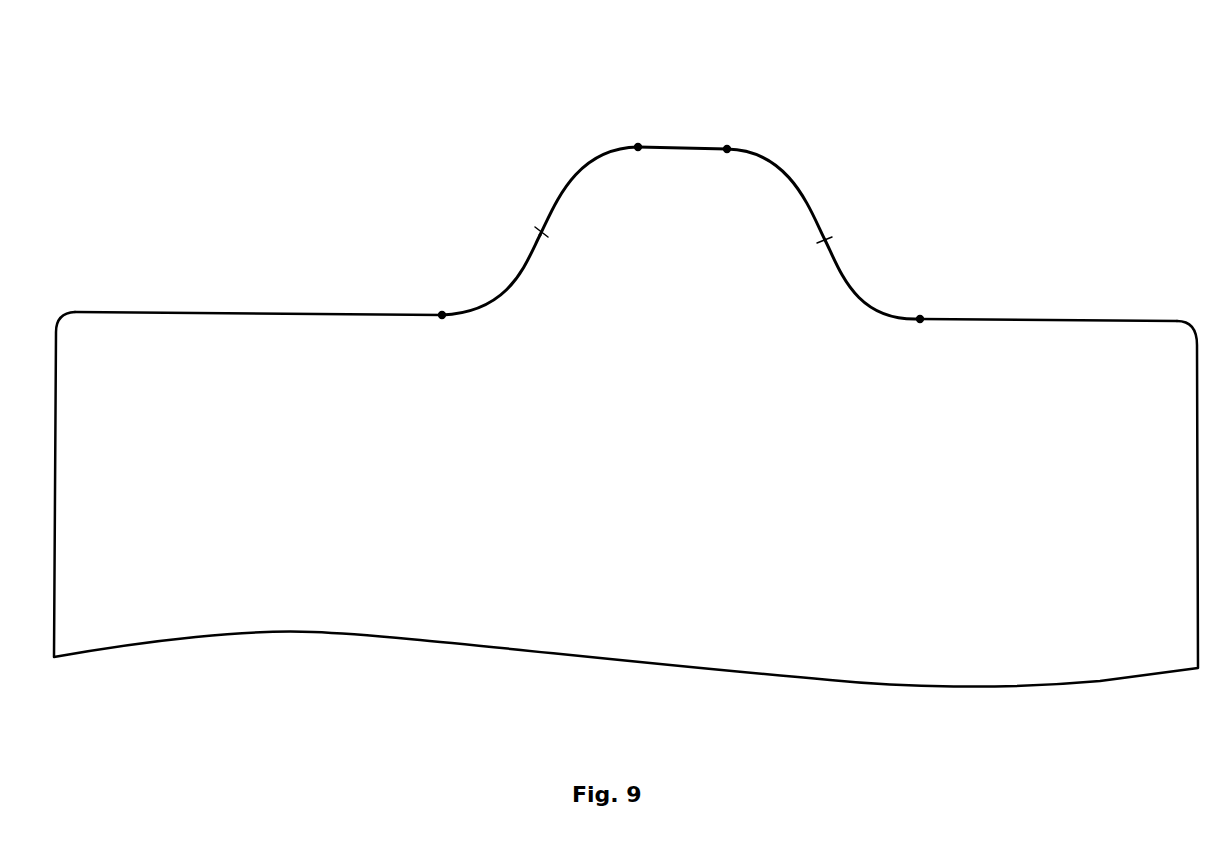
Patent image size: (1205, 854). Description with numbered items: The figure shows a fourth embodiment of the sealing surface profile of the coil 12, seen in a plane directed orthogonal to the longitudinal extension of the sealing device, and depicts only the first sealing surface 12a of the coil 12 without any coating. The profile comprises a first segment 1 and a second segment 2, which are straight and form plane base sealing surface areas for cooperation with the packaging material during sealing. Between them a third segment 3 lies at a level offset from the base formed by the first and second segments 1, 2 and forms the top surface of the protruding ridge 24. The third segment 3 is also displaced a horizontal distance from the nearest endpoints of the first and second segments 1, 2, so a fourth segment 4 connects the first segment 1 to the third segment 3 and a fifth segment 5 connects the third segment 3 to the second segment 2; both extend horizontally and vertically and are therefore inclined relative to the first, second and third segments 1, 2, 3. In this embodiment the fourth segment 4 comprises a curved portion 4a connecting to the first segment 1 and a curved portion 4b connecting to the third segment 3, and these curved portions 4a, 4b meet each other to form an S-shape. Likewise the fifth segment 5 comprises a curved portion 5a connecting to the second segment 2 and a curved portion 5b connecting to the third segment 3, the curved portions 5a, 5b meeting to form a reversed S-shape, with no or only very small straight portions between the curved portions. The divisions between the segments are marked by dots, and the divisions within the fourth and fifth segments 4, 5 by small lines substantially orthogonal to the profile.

The first segment 1 is at (203, 312).
The second segment 2 is at (1020, 321).
The third segment 3 is at (702, 147).
The fourth segment 4 is at (539, 212).
The curved portion 4a is at (492, 302).
The curved portion 4b is at (575, 170).
The fifth segment 5 is at (827, 216).
The curved portion 5a is at (833, 250).
The curved portion 5b is at (788, 168).
The coil 12 is at (310, 313).
The first sealing surface 12a is at (258, 265).
The protruding ridge 24 is at (683, 173).